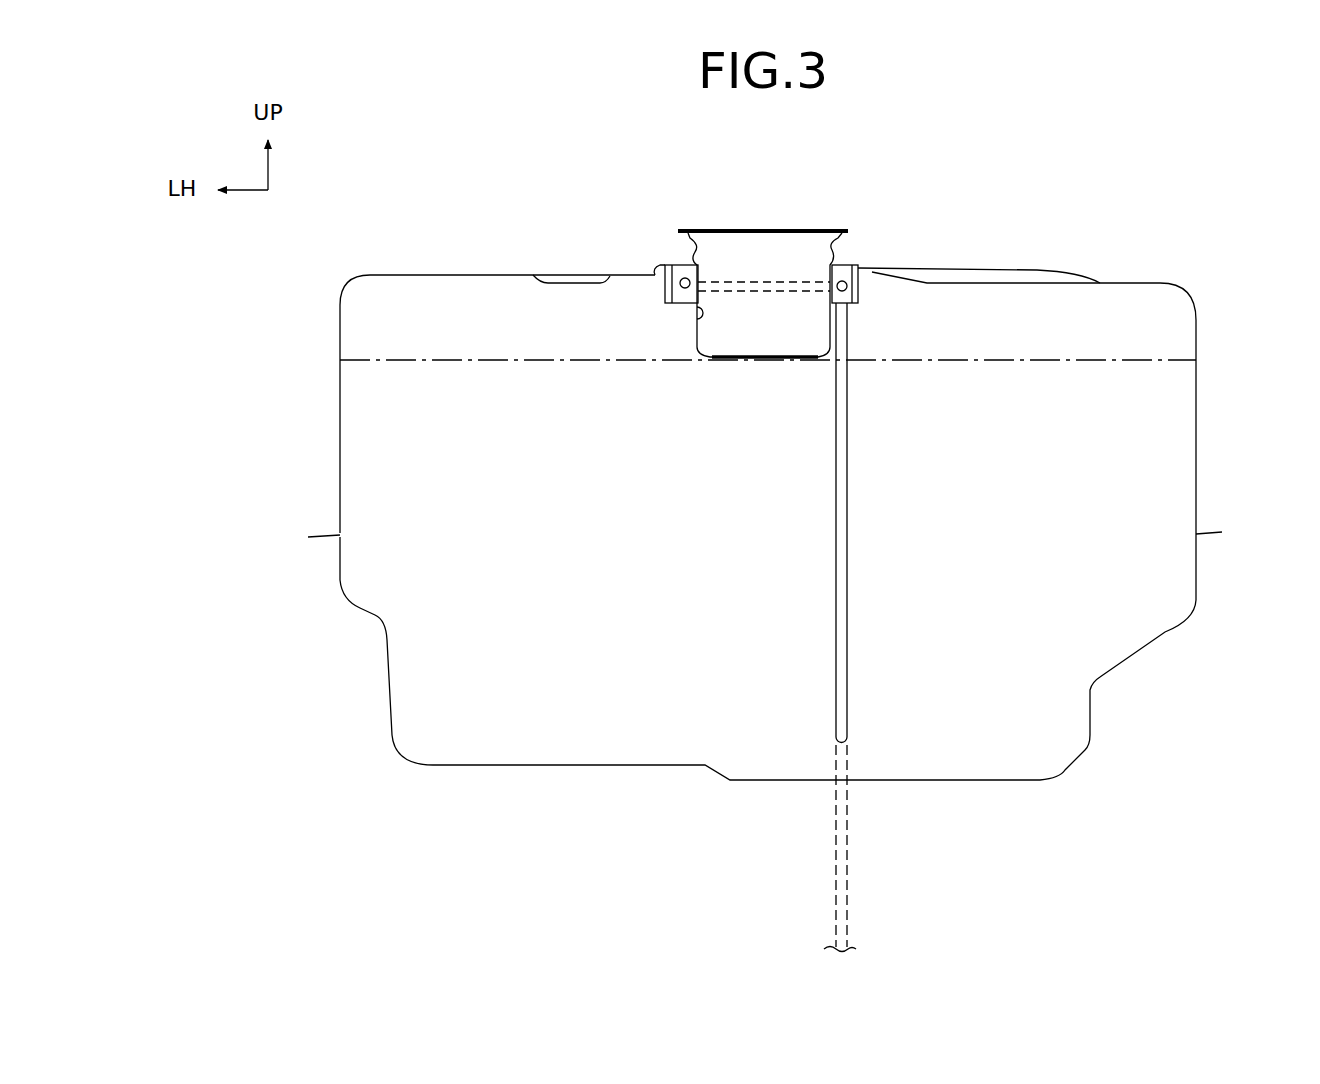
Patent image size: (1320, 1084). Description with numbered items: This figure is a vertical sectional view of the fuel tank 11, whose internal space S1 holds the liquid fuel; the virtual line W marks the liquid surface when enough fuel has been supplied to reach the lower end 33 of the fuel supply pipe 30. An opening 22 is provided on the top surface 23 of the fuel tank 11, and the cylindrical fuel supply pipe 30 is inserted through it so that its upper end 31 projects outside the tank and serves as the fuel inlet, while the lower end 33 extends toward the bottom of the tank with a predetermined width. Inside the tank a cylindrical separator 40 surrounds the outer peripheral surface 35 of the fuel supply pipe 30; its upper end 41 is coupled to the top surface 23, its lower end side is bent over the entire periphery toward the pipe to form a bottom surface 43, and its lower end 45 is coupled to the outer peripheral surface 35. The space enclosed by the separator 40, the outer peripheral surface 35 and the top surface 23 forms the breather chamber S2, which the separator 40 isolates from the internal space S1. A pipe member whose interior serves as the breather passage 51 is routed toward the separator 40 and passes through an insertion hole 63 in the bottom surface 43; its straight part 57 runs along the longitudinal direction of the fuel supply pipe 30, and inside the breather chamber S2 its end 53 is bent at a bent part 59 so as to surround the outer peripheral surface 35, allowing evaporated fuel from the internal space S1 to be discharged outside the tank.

The fuel tank 11 is at (1101, 281).
The opening 22 is at (811, 262).
The top surface 23 is at (1037, 268).
The fuel supply pipe 30 is at (767, 285).
The upper end 31 is at (850, 231).
The lower end 33 is at (707, 354).
The outer peripheral surface 35 is at (695, 340).
The separator 40 is at (862, 291).
The upper end 41 is at (676, 265).
The bottom surface 43 is at (668, 302).
The lower end 45 is at (692, 323).
The breather passage 51 is at (850, 865).
The end 53 is at (744, 290).
The straight part 57 is at (850, 422).
The bent part 59 is at (860, 268).
The insertion hole 63 is at (847, 304).
The internal space S1 is at (465, 440).
The breather chamber S2 is at (664, 287).
The virtual line W is at (1150, 360).